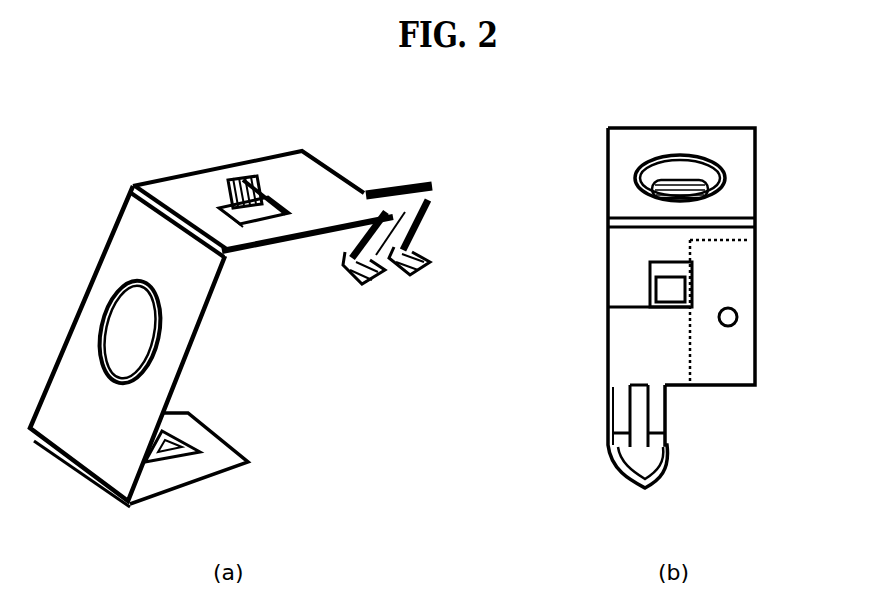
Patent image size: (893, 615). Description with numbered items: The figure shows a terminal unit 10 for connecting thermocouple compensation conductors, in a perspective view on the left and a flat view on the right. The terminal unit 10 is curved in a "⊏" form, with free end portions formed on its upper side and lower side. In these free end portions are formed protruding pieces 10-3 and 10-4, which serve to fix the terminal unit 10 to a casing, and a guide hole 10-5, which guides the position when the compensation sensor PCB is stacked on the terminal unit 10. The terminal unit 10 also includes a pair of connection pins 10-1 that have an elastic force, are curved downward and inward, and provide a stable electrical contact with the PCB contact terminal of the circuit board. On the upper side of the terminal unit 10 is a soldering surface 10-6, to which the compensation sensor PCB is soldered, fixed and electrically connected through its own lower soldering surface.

The terminal unit 10 is at (103, 222).
The connection pins 10-1 is at (483, 155).
The protruding piece 10-3 is at (263, 200).
The protruding piece 10-4 is at (164, 454).
The guide hole 10-5 is at (250, 190).
The soldering surface 10-6 is at (752, 358).